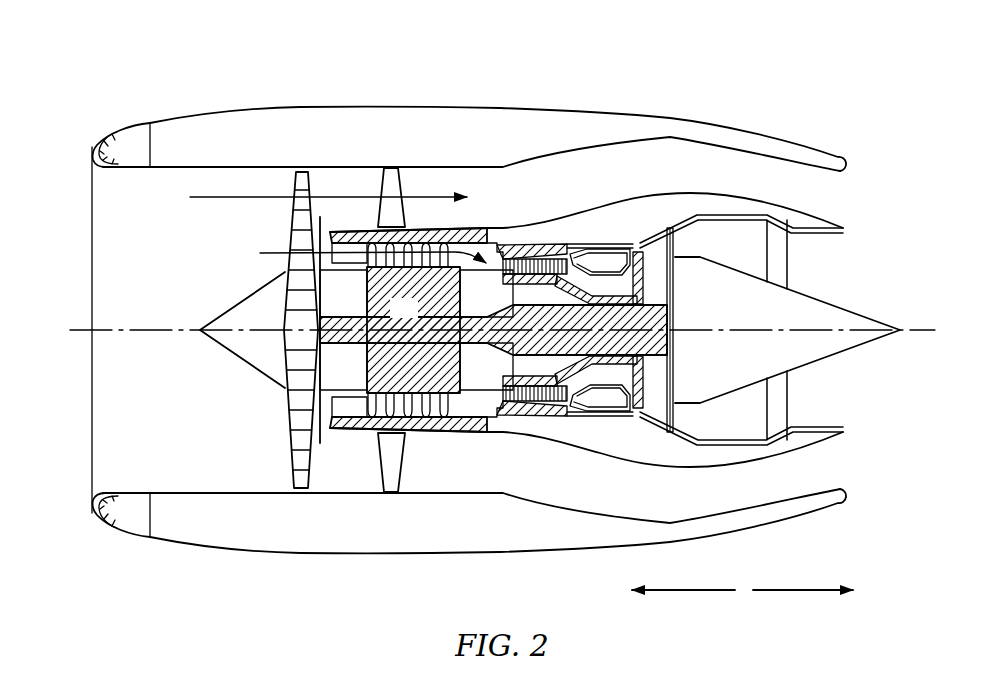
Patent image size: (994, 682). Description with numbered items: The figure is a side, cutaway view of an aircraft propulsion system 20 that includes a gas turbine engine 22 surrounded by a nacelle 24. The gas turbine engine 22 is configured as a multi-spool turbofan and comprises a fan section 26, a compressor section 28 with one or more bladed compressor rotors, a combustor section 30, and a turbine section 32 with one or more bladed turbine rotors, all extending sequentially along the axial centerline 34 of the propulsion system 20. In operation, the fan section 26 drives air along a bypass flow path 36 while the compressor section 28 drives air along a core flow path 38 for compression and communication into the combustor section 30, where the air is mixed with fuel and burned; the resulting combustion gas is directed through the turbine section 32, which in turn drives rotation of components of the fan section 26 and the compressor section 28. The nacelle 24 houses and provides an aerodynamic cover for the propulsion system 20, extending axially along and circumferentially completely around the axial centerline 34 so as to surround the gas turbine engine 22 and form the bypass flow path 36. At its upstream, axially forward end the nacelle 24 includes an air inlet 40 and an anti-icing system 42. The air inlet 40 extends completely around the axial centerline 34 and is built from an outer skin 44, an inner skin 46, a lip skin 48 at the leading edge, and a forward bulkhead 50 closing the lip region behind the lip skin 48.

The propulsion system 20 is at (757, 97).
The gas turbine engine 22 is at (768, 187).
The nacelle 24 is at (152, 84).
The fan section 26 is at (276, 460).
The compressor section 28 is at (426, 446).
The combustor section 30 is at (594, 420).
The turbine section 32 is at (638, 426).
The axial centerline 34 is at (919, 332).
The bypass flow path 36 is at (425, 197).
The core flow path 38 is at (467, 270).
The air inlet 40 is at (88, 128).
The anti-icing system 42 is at (92, 148).
The outer skin 44 is at (200, 114).
The inner skin 46 is at (187, 168).
The lip skin 48 is at (117, 131).
The forward bulkhead 50 is at (140, 168).